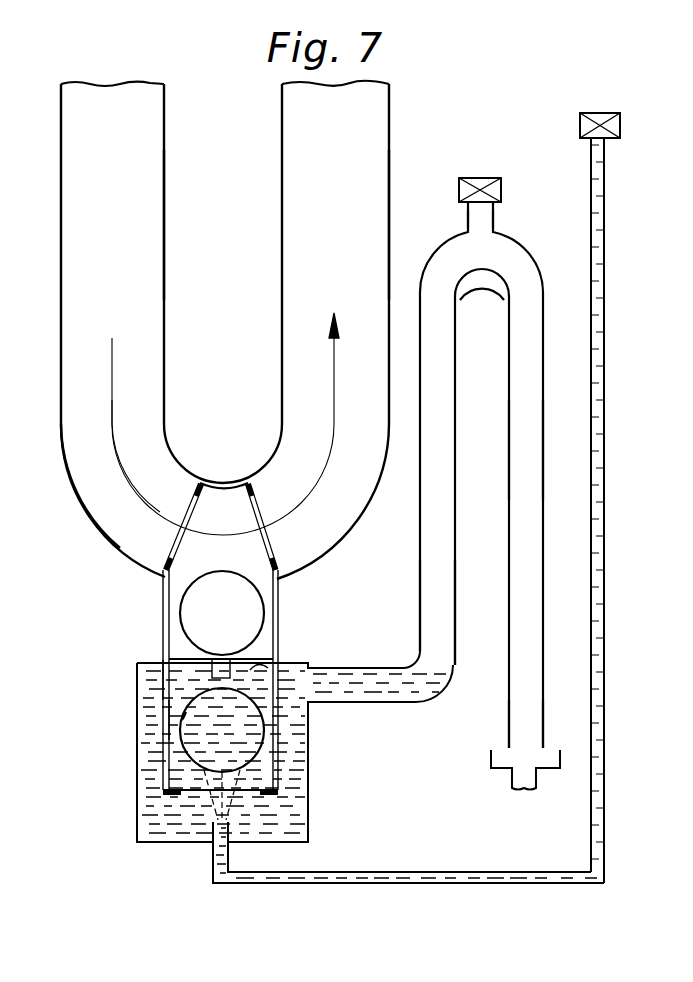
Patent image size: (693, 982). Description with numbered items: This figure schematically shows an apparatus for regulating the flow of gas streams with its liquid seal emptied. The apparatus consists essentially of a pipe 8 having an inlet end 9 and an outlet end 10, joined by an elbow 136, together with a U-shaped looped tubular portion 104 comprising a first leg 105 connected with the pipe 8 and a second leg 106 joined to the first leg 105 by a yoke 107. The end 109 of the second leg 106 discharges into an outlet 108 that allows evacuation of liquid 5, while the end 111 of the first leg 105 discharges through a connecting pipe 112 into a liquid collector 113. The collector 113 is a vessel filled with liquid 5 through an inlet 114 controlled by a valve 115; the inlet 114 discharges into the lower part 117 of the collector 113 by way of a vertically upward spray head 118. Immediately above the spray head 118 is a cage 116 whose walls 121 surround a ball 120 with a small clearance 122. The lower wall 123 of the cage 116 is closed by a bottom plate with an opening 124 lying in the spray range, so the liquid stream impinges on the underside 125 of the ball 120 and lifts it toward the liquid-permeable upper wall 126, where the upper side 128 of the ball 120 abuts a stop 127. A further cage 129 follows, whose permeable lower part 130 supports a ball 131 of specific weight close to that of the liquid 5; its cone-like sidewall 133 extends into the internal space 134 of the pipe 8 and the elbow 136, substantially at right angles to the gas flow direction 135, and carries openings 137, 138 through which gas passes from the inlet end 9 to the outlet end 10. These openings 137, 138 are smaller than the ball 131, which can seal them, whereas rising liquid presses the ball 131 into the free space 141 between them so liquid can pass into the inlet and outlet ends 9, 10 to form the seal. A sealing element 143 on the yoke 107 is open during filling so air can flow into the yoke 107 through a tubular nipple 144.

The liquid 5 is at (310, 758).
The pipe 8 is at (390, 128).
The inlet end 9 is at (150, 198).
The outlet end 10 is at (389, 185).
The looped tubular portion 104 is at (511, 250).
The first leg 105 is at (455, 440).
The second leg 106 is at (545, 440).
The yoke 107 is at (482, 272).
The outlet 108 is at (490, 769).
The end of second leg 109 is at (506, 745).
The end of first leg 111 is at (449, 626).
The connecting pipe 112 is at (358, 680).
The liquid collector 113 is at (300, 787).
The inlet 114 is at (430, 872).
The valve 115 is at (586, 120).
The cage 116 is at (300, 737).
The lower part of liquid collector 117 is at (168, 847).
The spray head 118 is at (214, 826).
The ball 120 is at (192, 738).
The walls of cage 121 is at (164, 688).
The clearance 122 is at (178, 724).
The lower wall of cage 123 is at (172, 797).
The opening 124 is at (262, 795).
The underside of ball 125 is at (194, 760).
The upper wall of cage 126 is at (270, 690).
The stop 127 is at (216, 668).
The upper side of ball 128 is at (165, 681).
The further cage 129 is at (283, 601).
The lower part of further cage 130 is at (262, 666).
The ball 131 is at (192, 600).
The sidewall 133 is at (255, 484).
The internal space 134 is at (136, 454).
The direction of gas flow 135 is at (337, 345).
The elbow 136 is at (96, 523).
The opening 137 is at (201, 509).
The opening 138 is at (268, 535).
The free space 141 is at (237, 492).
The sealing element 143 is at (478, 190).
The tubular nipple 144 is at (494, 220).